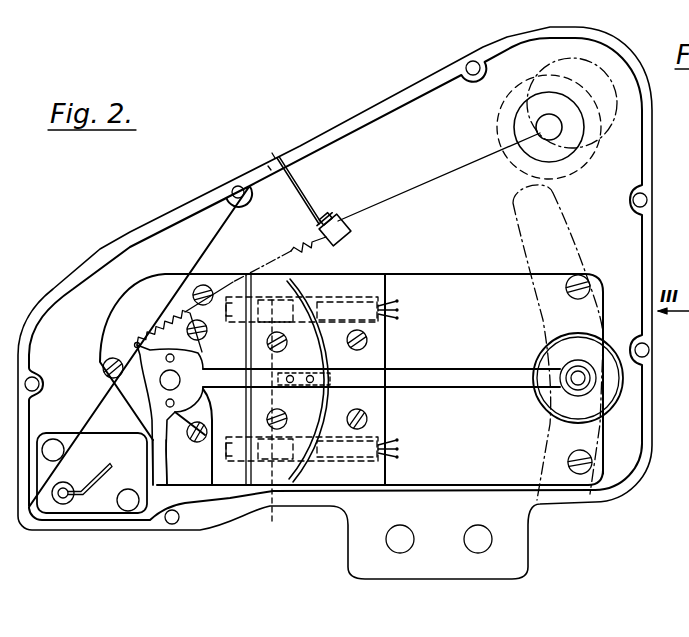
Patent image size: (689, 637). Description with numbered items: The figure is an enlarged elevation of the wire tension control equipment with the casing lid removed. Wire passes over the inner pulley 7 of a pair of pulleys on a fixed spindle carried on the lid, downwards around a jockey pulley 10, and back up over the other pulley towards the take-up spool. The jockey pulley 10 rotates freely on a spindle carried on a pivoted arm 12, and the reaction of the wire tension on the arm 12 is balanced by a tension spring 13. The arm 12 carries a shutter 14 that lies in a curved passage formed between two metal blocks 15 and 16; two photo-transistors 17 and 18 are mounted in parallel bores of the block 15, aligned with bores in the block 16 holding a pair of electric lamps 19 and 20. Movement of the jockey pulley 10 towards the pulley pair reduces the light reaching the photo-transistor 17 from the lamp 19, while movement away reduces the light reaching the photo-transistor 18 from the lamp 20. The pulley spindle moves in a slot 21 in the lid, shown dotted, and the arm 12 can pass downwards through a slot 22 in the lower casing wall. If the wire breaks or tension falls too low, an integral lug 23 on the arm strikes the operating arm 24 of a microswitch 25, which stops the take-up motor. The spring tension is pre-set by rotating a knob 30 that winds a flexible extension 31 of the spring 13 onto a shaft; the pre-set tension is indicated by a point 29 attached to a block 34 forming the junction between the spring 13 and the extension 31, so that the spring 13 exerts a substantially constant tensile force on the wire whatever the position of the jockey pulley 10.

The inner pulley 7 is at (612, 108).
The jockey pulley 10 is at (617, 346).
The pivoted arm 12 is at (438, 375).
The tension spring 13 is at (160, 324).
The shutter 14 is at (330, 367).
The metal block 15 is at (342, 285).
The metal block 16 is at (265, 290).
The photo-transistor 17 is at (387, 275).
The photo-transistor 18 is at (387, 426).
The electric lamp 19 is at (299, 278).
The electric lamp 20 is at (283, 419).
The slot 21 is at (557, 237).
The slot 22 is at (637, 482).
The integral lug 23 is at (155, 443).
The operating arm 24 is at (98, 473).
The microswitch 25 is at (108, 507).
The point 29 is at (274, 157).
The knob 30 is at (570, 171).
The flexible extension 31 is at (397, 192).
The block 34 is at (338, 223).